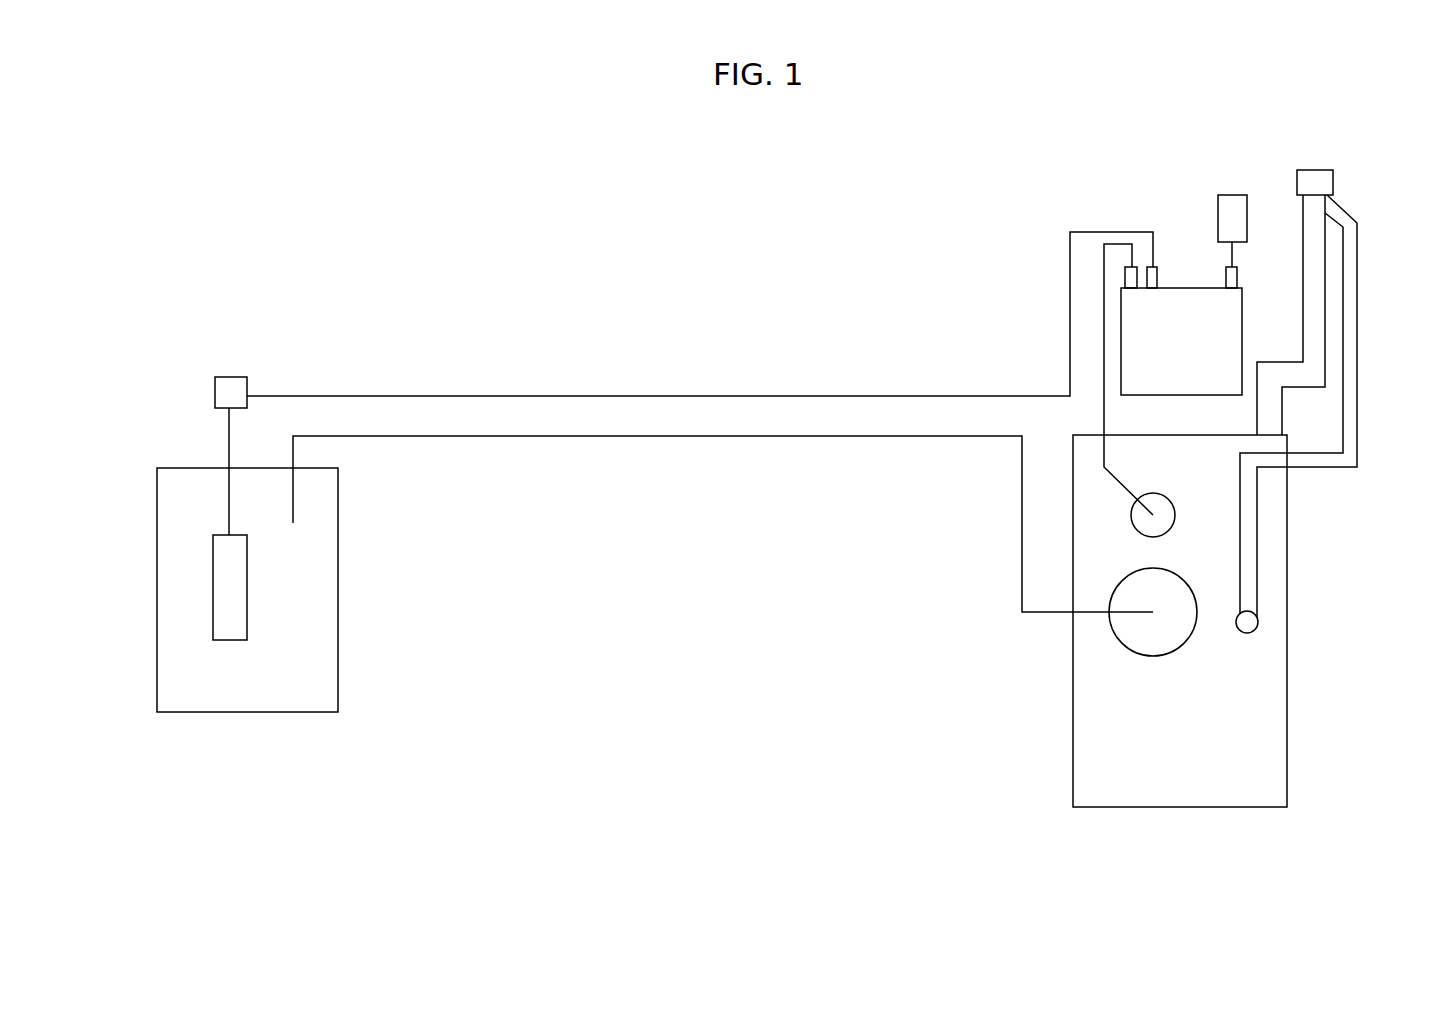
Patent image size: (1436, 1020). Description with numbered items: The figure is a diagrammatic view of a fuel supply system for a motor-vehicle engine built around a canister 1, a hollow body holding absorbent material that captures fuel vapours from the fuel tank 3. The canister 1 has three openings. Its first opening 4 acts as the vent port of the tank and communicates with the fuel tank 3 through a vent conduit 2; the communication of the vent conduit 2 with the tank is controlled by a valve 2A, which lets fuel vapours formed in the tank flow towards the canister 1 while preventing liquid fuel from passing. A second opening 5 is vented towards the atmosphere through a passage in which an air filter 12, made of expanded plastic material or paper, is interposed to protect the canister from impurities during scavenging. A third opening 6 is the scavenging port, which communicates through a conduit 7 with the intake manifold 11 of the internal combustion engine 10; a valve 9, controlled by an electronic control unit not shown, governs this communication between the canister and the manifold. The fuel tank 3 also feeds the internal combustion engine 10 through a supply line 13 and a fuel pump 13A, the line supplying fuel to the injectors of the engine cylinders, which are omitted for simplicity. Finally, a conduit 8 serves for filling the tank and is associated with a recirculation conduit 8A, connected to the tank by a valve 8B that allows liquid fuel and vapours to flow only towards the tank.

The canister 1 is at (1150, 337).
The vent conduit 2 is at (1107, 410).
The valve 2A is at (1167, 502).
The fuel tank 3 is at (1087, 742).
The first opening 4 is at (1128, 272).
The second opening 5 is at (1237, 277).
The third opening 6 is at (1156, 272).
The conduit 7 is at (598, 396).
The filling conduit 8 is at (1317, 170).
The recirculation conduit 8A is at (1357, 290).
The valve 8B is at (1243, 634).
The valve 9 is at (228, 377).
The internal combustion engine 10 is at (338, 632).
The intake manifold 11 is at (238, 590).
The air filter 12 is at (1233, 205).
The supply line 13 is at (641, 437).
The fuel pump 13A is at (1153, 645).